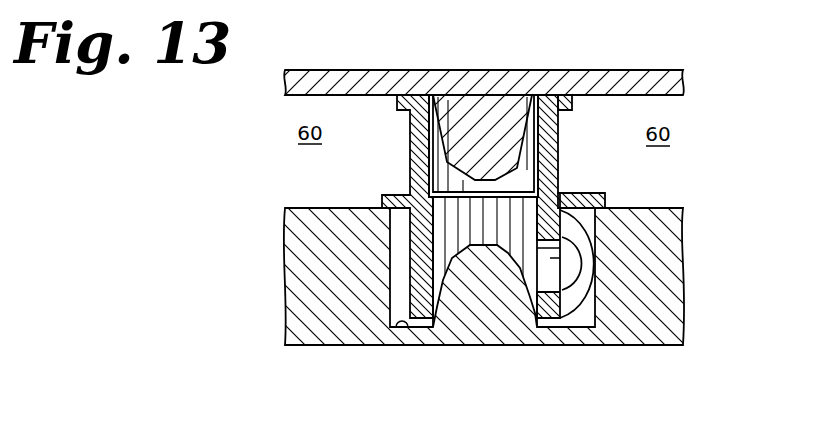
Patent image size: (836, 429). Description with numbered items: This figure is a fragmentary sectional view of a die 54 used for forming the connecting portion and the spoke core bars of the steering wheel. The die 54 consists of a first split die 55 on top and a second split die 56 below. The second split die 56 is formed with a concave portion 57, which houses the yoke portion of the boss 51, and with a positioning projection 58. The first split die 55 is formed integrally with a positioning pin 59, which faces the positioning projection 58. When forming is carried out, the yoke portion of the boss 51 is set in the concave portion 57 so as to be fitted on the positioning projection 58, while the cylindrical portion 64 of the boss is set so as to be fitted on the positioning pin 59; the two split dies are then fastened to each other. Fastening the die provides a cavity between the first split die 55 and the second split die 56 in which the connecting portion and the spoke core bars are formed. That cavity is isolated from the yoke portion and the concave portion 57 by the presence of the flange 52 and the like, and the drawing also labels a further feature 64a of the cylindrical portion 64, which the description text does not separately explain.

The boss 51 is at (396, 151).
The flange 52 is at (605, 198).
The die 54 is at (732, 123).
The first split die 55 is at (594, 70).
The second split die 56 is at (678, 306).
The concave portion 57 is at (404, 322).
The positioning projection 58 is at (476, 312).
The positioning pin 59 is at (518, 123).
The cylindrical portion 64 is at (410, 175).
The upper flange 64a is at (578, 110).